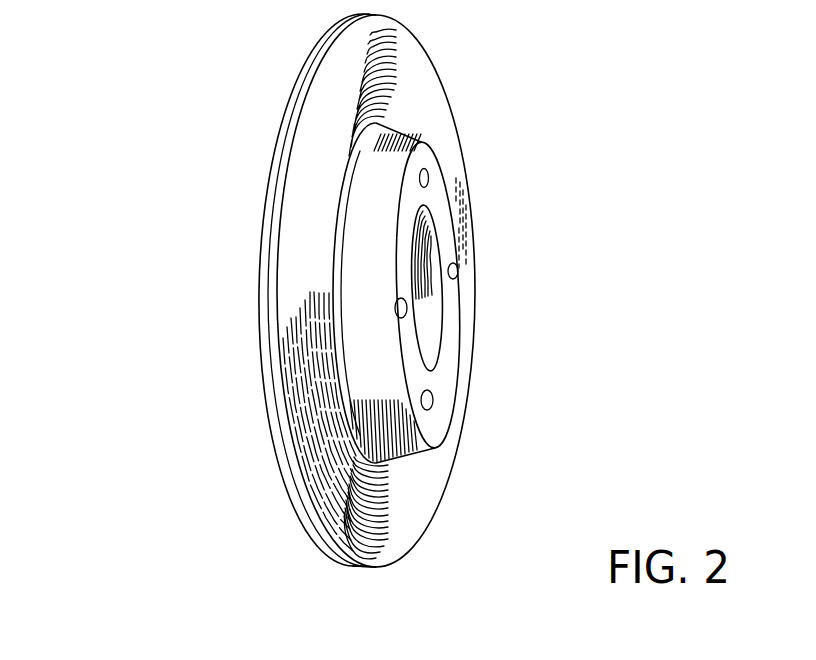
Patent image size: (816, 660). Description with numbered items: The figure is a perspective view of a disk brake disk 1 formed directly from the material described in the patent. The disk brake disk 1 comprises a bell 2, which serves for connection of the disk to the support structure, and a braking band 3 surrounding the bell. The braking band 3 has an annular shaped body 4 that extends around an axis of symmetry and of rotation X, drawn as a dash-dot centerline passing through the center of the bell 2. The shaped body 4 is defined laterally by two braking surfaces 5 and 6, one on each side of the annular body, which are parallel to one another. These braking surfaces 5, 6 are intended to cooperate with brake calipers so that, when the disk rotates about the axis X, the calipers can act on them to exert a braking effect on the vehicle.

The disk brake disk 1 is at (474, 72).
The bell 2 is at (423, 424).
The braking band 3 is at (428, 108).
The annular shaped body 4 is at (410, 552).
The braking surface 5 is at (266, 393).
The braking surface 6 is at (419, 496).
The axis of symmetry and of rotation X is at (700, 265).